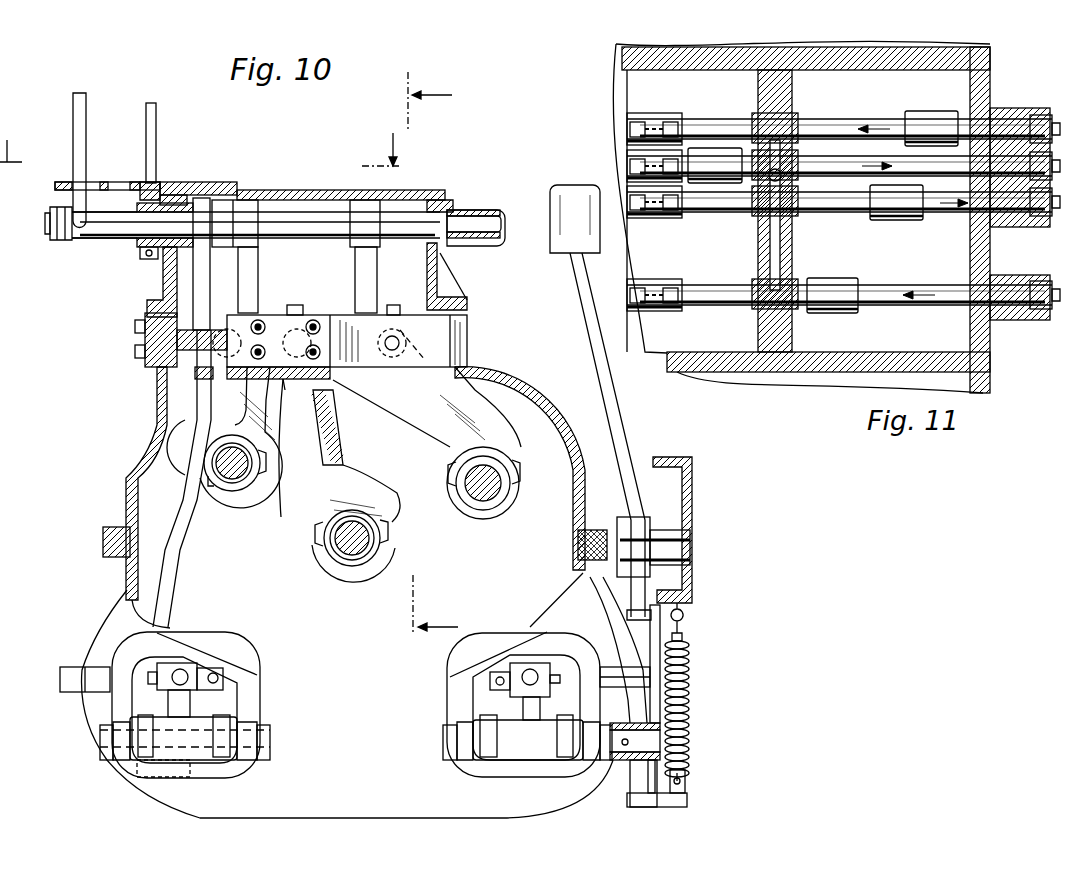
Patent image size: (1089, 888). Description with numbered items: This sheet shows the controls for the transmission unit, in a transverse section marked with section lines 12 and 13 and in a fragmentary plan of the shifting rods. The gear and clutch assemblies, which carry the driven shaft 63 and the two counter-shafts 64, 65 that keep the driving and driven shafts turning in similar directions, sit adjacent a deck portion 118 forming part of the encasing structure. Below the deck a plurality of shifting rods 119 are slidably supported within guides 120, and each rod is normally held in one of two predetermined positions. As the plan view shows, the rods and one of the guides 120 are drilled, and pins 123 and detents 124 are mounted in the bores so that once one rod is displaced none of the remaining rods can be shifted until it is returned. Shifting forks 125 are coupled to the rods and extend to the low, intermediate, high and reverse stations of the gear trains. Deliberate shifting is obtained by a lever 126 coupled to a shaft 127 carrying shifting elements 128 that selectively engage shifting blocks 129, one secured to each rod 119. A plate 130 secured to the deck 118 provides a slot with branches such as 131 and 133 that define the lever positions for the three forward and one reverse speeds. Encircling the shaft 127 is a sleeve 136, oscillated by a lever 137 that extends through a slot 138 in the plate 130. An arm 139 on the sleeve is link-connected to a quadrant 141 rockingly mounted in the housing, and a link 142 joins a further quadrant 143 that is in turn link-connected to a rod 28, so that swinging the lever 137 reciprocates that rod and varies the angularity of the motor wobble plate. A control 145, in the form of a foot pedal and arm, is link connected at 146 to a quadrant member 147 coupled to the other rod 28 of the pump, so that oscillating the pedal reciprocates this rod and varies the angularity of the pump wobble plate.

In FIG. 10, the section line 12 is at (433, 346).
In FIG. 10, the section line 13 is at (213, 166).
In FIG. 10, the rod 28 is at (530, 667).
In FIG. 10, the driven shaft 63 is at (355, 562).
In FIG. 10, the counter-shaft 64 is at (235, 478).
In FIG. 10, the counter-shaft 65 is at (484, 500).
In FIG. 10, the deck portion 118 is at (253, 190).
In FIG. 10, the shifting rods 119 is at (403, 220).
In FIG. 11, the shifting rods 119 is at (713, 292).
In FIG. 11, the guides 120 is at (783, 107).
In FIG. 11, the pins 123 is at (783, 215).
In FIG. 11, the detents 124 is at (781, 257).
In FIG. 10, the shifting forks 125 is at (353, 467).
In FIG. 11, the shifting forks 125 is at (903, 220).
In FIG. 10, the lever 126 is at (72, 107).
In FIG. 10, the shaft 127 is at (113, 227).
In FIG. 10, the shifting elements 128 is at (358, 265).
In FIG. 10, the shifting blocks 129 is at (303, 306).
In FIG. 11, the shifting blocks 129 is at (643, 282).
In FIG. 10, the plate 130 is at (203, 181).
In FIG. 10, the slot branch 131 is at (107, 181).
In FIG. 10, the slot branch 133 is at (72, 181).
In FIG. 10, the sleeve 136 is at (133, 245).
In FIG. 10, the lever 137 is at (145, 112).
In FIG. 10, the slot 138 is at (155, 178).
In FIG. 10, the arm 139 is at (200, 267).
In FIG. 10, the quadrant 141 is at (155, 370).
In FIG. 10, the link 142 is at (175, 562).
In FIG. 10, the quadrant 143 is at (190, 713).
In FIG. 10, the control 145 is at (617, 410).
In FIG. 10, the link 146 is at (655, 708).
In FIG. 10, the quadrant member 147 is at (640, 780).